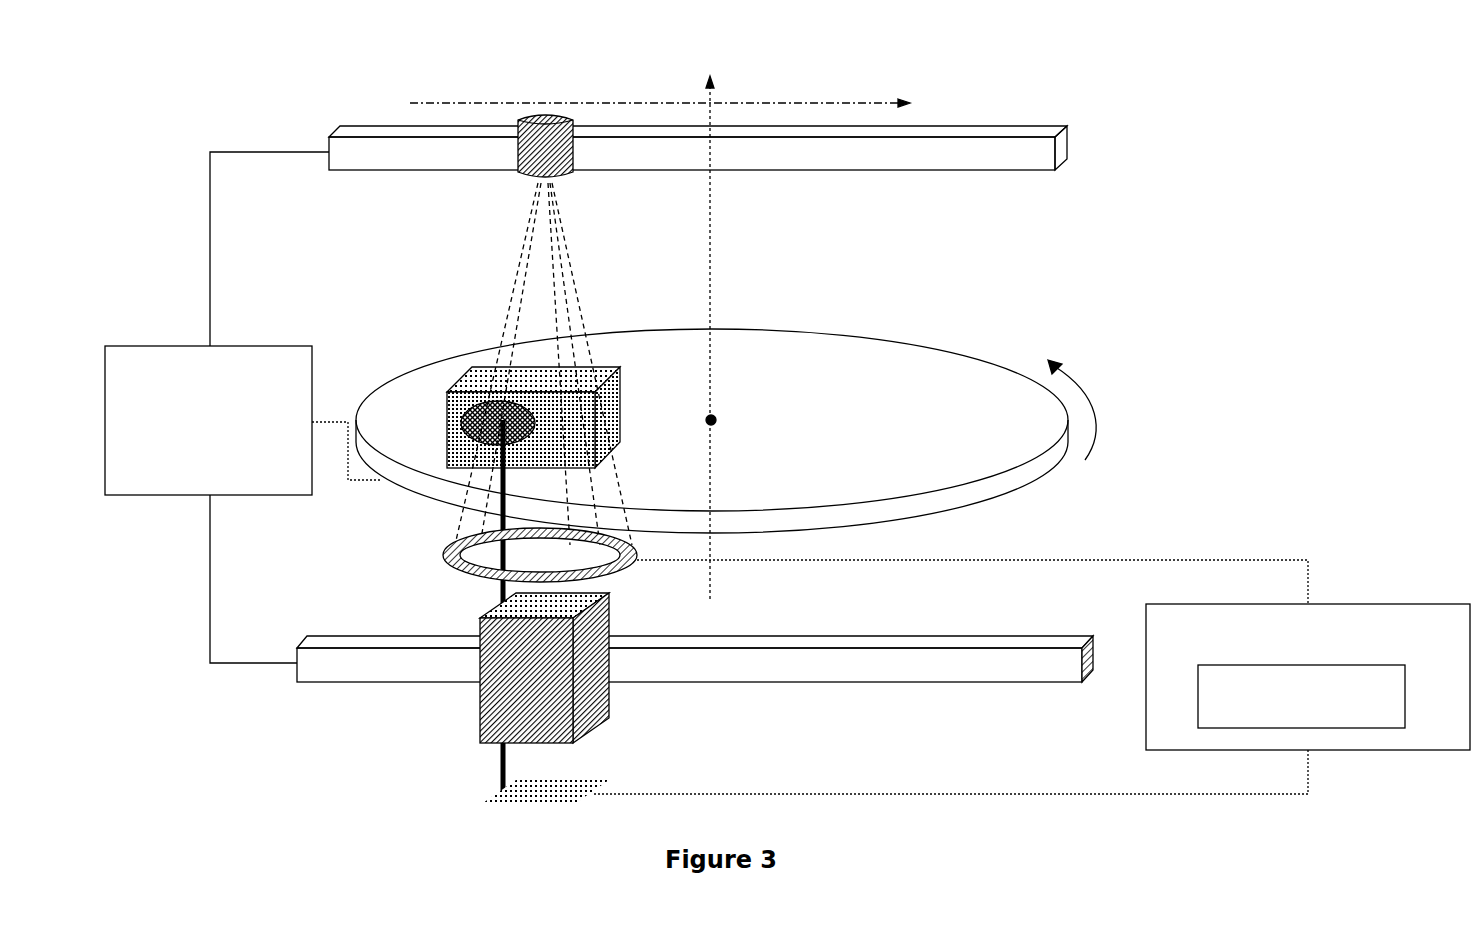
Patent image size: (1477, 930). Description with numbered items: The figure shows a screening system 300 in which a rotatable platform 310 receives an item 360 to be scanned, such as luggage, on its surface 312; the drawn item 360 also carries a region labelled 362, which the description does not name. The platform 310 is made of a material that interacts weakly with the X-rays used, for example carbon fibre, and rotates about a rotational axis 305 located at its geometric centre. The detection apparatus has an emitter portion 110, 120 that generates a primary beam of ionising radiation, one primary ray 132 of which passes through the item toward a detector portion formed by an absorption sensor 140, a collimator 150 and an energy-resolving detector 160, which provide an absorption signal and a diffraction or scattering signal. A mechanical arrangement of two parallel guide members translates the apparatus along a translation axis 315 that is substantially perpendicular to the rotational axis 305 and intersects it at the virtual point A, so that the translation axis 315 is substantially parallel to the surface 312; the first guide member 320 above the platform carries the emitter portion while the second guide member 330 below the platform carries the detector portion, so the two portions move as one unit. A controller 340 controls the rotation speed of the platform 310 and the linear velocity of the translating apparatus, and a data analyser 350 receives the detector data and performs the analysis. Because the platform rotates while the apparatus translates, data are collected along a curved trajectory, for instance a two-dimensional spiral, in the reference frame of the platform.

The emitter portion 110 is at (480, 168).
The emitter portion 120 is at (516, 172).
The primary ray 132 is at (515, 334).
The absorption sensor 140 is at (447, 566).
The collimator 150 is at (480, 695).
The energy-resolving detector 160 is at (590, 783).
The screening system 300 is at (172, 733).
The rotational axis 305 is at (713, 315).
The rotatable platform 310 is at (726, 416).
The surface of the rotatable platform 312 is at (888, 367).
The translation axis 315 is at (410, 103).
The first guide member 320 is at (1015, 158).
The second guide member 330 is at (1015, 683).
The controller 340 is at (153, 345).
The data analyser 350 is at (1357, 603).
The item 360 is at (480, 389).
The sample 362 is at (471, 368).